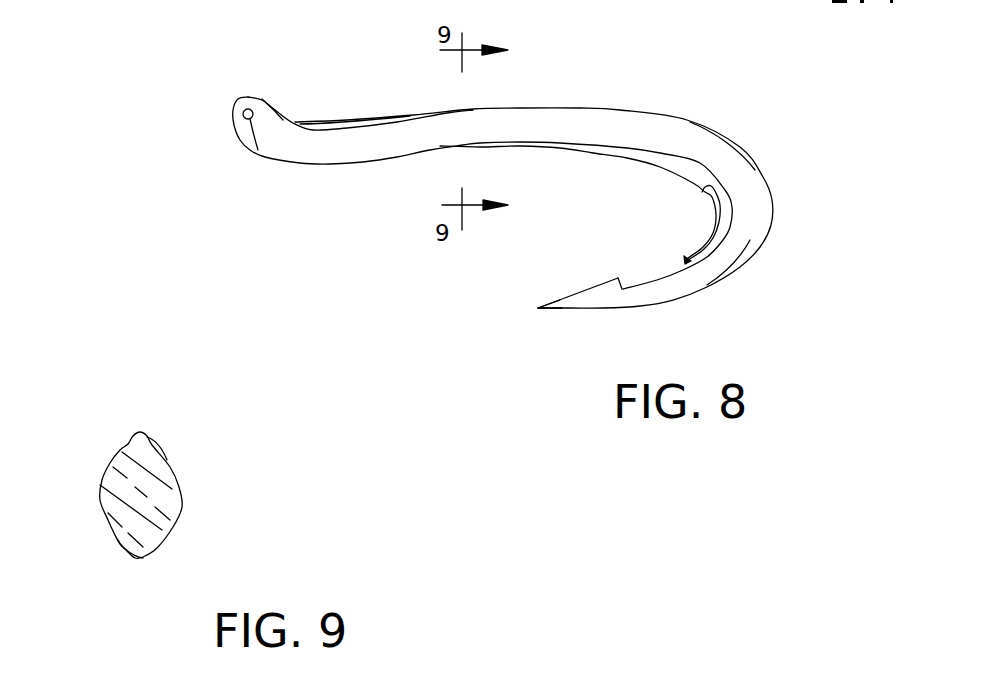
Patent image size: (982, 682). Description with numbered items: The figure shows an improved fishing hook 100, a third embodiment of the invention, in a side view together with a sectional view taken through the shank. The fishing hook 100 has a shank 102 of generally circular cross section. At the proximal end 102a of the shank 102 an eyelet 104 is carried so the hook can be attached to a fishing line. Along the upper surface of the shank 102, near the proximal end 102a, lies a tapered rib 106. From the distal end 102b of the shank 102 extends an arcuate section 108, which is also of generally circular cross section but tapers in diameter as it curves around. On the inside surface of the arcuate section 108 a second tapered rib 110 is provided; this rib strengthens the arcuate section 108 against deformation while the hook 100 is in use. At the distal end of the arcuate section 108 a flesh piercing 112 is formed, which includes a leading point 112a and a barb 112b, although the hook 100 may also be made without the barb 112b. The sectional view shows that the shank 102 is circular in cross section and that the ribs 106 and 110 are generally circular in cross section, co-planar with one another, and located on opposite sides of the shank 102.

In FIG. 8, the fishing hook 100 is at (340, 181).
In FIG. 8, the shank 102 is at (590, 123).
In FIG. 9, the shank 102 is at (185, 490).
In FIG. 8, the proximal end of shank 102a is at (278, 132).
In FIG. 8, the distal end of shank 102b is at (705, 143).
In FIG. 8, the eyelet 104 is at (255, 150).
In FIG. 8, the tapered rib 106 is at (388, 122).
In FIG. 9, the tapered rib 106 is at (138, 433).
In FIG. 8, the arcuate section 108 is at (753, 205).
In FIG. 8, the tapered rib 110 is at (702, 191).
In FIG. 9, the tapered rib 110 is at (142, 558).
In FIG. 8, the flesh piercing 112 is at (562, 274).
In FIG. 8, the leading point 112a is at (538, 310).
In FIG. 8, the barb 112b is at (619, 278).